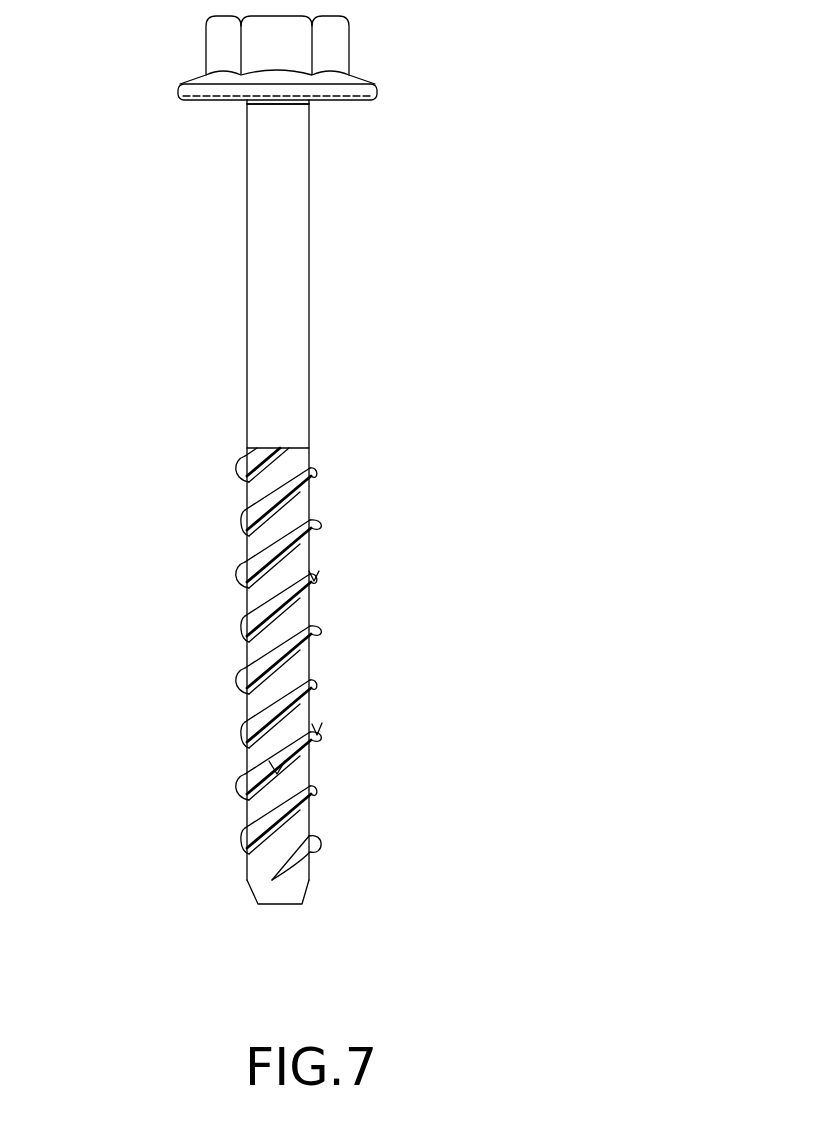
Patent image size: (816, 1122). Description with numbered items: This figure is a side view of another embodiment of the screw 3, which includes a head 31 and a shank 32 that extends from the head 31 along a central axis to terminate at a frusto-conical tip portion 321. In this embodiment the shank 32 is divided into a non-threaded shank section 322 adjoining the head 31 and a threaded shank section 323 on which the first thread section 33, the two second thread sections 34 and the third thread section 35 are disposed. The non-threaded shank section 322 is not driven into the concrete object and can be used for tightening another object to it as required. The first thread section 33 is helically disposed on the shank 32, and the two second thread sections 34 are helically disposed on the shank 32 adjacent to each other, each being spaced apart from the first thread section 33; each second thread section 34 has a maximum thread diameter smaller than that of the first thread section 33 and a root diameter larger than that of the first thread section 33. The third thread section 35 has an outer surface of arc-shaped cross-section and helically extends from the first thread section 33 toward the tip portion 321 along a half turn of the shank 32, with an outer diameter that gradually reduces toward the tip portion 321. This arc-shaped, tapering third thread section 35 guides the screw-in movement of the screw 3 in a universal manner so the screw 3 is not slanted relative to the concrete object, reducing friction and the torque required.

The screw 3 is at (170, 272).
The head 31 is at (337, 43).
The shank 32 is at (327, 283).
The tip portion 321 is at (293, 889).
The non-threaded shank section 322 is at (302, 388).
The threaded shank section 323 is at (303, 665).
The first thread section 33 is at (316, 512).
The second thread sections 34 is at (312, 570).
The third thread section 35 is at (315, 843).